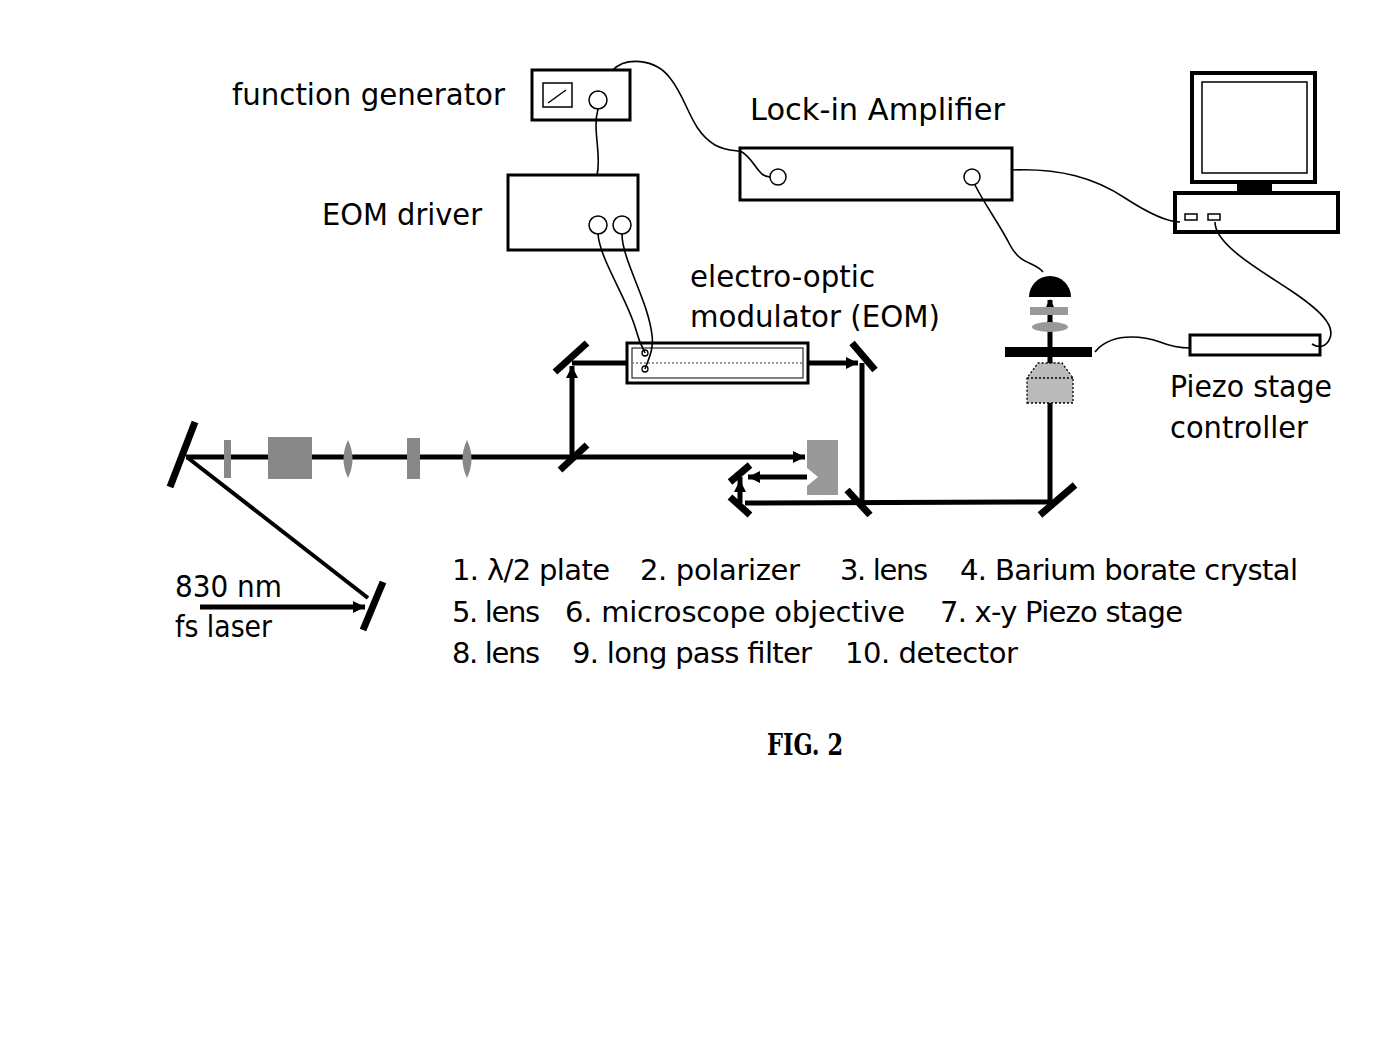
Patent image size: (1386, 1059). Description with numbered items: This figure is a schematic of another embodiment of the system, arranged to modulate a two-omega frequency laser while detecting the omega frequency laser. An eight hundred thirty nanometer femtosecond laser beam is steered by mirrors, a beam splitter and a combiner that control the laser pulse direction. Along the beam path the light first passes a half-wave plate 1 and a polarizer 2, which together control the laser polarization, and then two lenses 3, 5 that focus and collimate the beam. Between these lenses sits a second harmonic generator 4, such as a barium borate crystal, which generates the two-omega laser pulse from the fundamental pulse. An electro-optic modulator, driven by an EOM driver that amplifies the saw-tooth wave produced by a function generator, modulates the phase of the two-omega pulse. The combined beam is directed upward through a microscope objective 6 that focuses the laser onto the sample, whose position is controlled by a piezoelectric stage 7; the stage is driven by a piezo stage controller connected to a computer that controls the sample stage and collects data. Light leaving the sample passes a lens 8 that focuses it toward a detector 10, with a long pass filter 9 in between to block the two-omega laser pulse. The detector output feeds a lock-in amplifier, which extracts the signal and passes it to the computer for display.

The half-wave plate 1 is at (227, 438).
The polarizer 2 is at (290, 438).
The lens 3 is at (343, 438).
The second harmonic generator 4 is at (411, 438).
The lens 5 is at (466, 438).
The microscope objective 6 is at (1087, 383).
The piezoelectric stage 7 is at (1097, 353).
The lens 8 is at (1075, 322).
The long pass filter 9 is at (1073, 310).
The detector 10 is at (1073, 273).